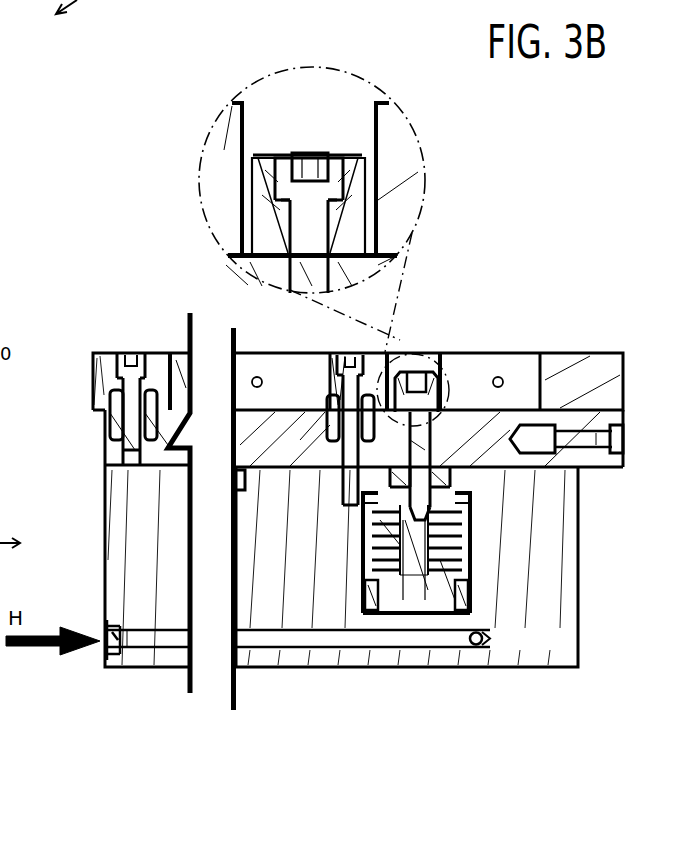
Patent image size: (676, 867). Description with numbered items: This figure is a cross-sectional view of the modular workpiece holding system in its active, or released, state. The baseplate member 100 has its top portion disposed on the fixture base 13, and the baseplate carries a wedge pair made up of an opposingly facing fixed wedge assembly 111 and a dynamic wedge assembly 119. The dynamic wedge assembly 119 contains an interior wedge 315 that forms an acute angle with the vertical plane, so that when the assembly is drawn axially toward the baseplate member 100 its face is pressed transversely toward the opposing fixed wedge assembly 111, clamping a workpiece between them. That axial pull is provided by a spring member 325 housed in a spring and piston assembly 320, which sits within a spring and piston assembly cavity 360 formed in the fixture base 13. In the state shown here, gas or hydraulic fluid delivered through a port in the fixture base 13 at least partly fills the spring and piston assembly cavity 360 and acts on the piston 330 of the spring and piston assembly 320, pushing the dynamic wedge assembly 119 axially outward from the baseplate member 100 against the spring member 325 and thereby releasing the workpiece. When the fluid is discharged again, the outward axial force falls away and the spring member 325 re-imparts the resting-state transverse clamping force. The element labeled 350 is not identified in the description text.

The fixture base 13 is at (0, 215).
The baseplate member 100 is at (0, 125).
The fixed wedge assembly 111 is at (588, 337).
The dynamic wedge assembly 119 is at (325, 225).
The interior wedge 315 is at (378, 182).
The spring and piston assembly 320 is at (498, 548).
The spring member 325 is at (463, 548).
The piston 330 is at (428, 597).
The rod head 350 is at (100, 648).
The spring and piston assembly cavity 360 is at (357, 498).